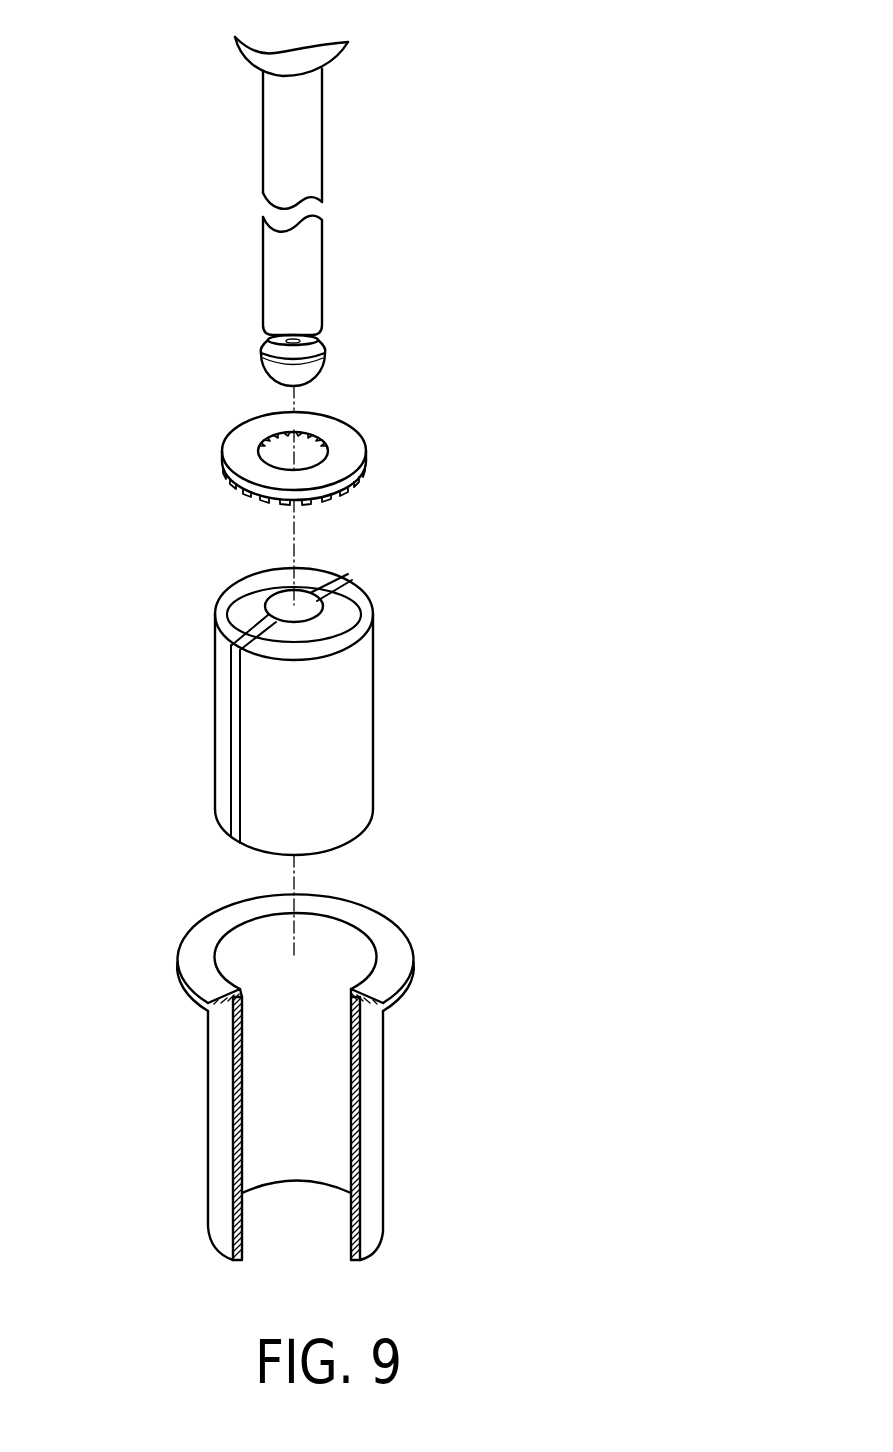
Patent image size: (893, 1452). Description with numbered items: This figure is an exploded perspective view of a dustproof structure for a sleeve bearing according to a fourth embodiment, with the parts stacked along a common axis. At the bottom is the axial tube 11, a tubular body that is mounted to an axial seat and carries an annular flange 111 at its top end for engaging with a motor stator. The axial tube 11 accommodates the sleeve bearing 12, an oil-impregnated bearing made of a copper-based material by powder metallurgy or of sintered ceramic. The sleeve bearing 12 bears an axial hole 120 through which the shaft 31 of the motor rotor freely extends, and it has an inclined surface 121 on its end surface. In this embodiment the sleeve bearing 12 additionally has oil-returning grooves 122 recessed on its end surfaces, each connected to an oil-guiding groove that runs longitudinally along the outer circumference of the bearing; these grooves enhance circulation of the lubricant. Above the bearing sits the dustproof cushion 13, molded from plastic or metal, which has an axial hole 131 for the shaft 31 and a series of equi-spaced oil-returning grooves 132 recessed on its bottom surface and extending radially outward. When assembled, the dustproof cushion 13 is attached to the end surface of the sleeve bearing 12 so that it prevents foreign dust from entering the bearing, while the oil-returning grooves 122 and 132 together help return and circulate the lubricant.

The shaft 31 is at (313, 273).
The dustproof cushion 13 is at (330, 435).
The axial hole 131 is at (326, 460).
The oil-returning grooves 132 is at (338, 494).
The sleeve bearing 12 is at (343, 747).
The axial hole 120 is at (264, 594).
The inclined surface 121 is at (362, 627).
The oil-returning grooves 122 is at (233, 610).
The axial tube 11 is at (370, 1148).
The annular flange 111 is at (397, 963).